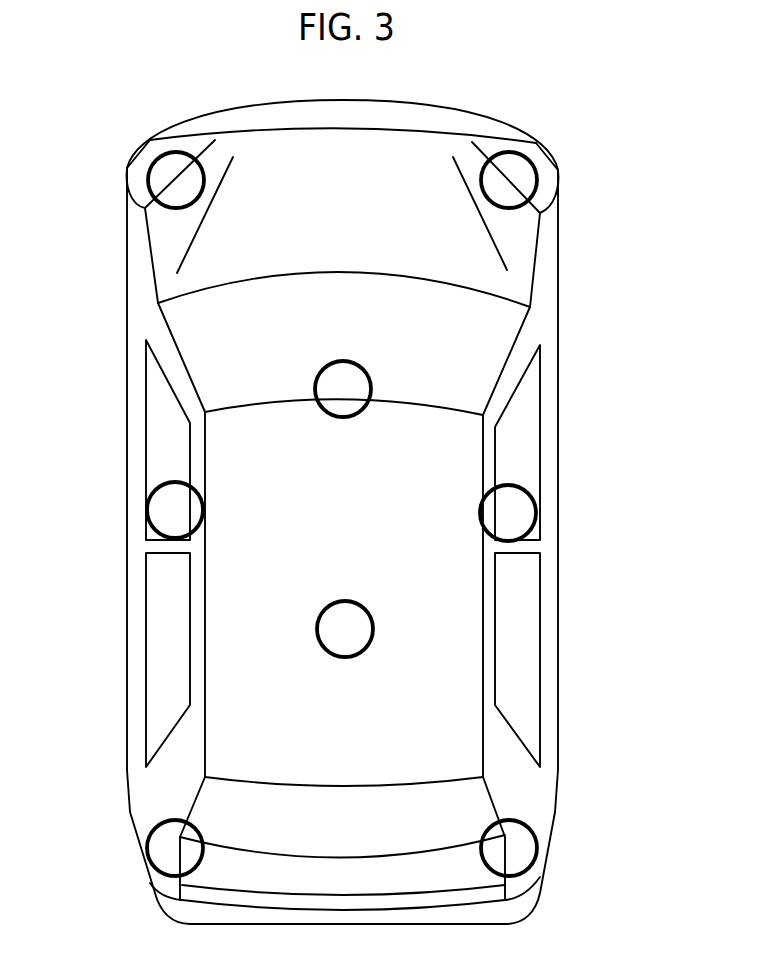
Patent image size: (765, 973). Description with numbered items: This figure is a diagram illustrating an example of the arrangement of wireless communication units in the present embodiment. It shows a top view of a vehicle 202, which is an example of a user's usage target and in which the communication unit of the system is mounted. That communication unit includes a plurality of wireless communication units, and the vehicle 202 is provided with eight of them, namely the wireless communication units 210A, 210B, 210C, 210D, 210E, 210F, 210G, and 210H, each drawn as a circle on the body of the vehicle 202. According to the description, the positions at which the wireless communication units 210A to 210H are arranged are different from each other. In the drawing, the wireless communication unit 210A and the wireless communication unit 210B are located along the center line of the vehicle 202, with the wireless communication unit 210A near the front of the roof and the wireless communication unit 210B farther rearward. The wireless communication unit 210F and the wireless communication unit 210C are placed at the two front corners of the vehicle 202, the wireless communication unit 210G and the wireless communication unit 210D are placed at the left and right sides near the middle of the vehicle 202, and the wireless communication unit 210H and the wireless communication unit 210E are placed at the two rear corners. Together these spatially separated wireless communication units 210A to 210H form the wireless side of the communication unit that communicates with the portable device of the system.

The vehicle 202 is at (558, 343).
The wireless communication unit 210A is at (350, 362).
The wireless communication unit 210B is at (352, 604).
The wireless communication unit 210C is at (532, 152).
The wireless communication unit 210D is at (528, 490).
The wireless communication unit 210E is at (532, 830).
The wireless communication unit 210F is at (160, 158).
The wireless communication unit 210G is at (153, 493).
The wireless communication unit 210H is at (155, 828).